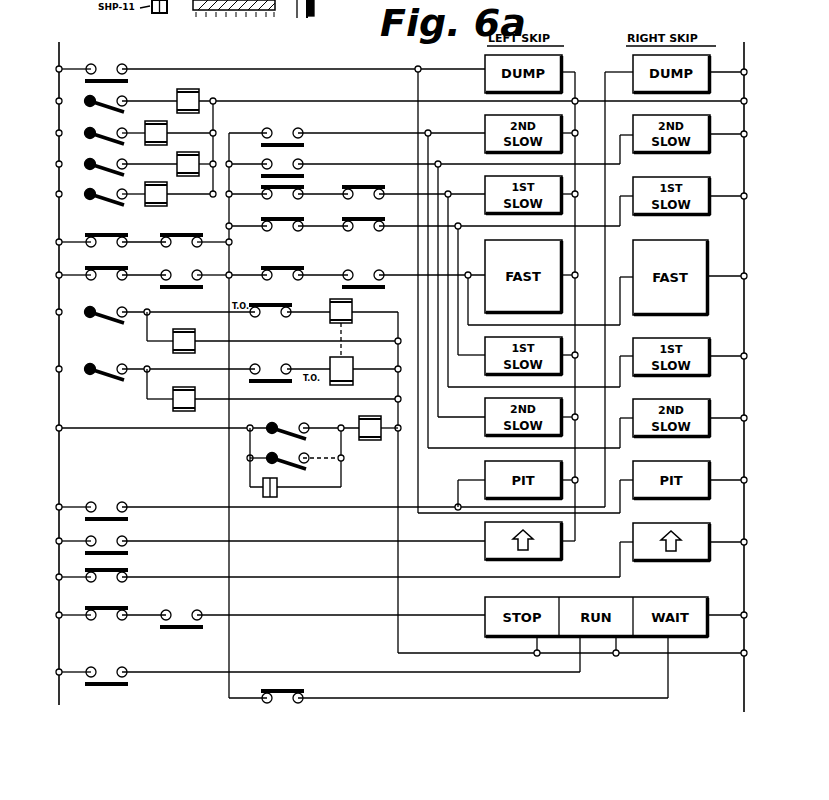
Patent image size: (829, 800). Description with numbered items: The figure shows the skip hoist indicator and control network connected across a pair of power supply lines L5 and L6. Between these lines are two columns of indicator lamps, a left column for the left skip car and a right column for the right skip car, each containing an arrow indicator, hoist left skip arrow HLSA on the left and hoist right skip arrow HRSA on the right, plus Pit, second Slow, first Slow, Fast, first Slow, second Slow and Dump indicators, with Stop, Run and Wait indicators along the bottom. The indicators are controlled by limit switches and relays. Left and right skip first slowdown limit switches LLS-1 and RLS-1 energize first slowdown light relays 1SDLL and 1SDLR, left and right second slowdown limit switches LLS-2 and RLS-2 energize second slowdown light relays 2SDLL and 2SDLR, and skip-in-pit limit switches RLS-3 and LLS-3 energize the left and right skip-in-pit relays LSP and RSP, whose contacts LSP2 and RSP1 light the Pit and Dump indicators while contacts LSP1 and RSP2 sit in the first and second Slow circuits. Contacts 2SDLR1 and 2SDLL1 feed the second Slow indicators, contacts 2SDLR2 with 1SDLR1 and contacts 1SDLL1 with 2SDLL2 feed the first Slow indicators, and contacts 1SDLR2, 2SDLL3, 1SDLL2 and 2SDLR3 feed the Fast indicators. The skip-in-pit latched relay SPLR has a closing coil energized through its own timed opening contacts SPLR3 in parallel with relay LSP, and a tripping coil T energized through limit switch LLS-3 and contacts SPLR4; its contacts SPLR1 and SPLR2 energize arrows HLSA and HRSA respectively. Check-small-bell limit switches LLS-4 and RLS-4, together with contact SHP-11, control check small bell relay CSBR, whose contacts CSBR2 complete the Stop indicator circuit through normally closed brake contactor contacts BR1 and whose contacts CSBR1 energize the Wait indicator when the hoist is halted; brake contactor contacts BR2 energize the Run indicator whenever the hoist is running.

The power supply line L5 is at (59, 48).
The power supply line L6 is at (744, 48).
The right skip-in-pit relay contacts RSP1 is at (108, 66).
The left skip first slowdown limit switch LLS-1 is at (123, 93).
The left skip first slowdown light relay 1SDLL is at (199, 92).
The right skip first slowdown limit switch RLS-1 is at (100, 132).
The right skip first slowdown light relay 1SDLR is at (167, 126).
The left skip second slowdown limit switch LLS-2 is at (100, 148).
The left skip second slowdown light relay 2SDLL is at (177, 157).
The right skip second slowdown limit switch RLS-2 is at (100, 178).
The right skip second slowdown light relay 2SDLR is at (167, 204).
The right skip-in-pit relay contacts RSP2 is at (103, 245).
The left skip-in-pit relay contacts LSP1 is at (166, 246).
The first slowdown left relay contacts 1SDLL2 is at (180, 258).
The second slowdown left relay contacts 2SDLL3 is at (113, 280).
The right skip-in-pit limit switch RLS-3 is at (109, 305).
The left skip-in-pit relay LSP is at (195, 338).
The left skip-in-pit limit switch LLS-3 is at (110, 353).
The right skip-in-pit relay RSP is at (195, 392).
The timed opening contacts SPLR3 is at (268, 315).
The skip-in-pit latched relay SPLR is at (346, 323).
The latched relay contacts SPLR4 is at (280, 372).
The tripping coil T is at (347, 370).
The left skip check-small-bell limit switch LLS-4 is at (293, 414).
The right skip check-small-bell limit switch RLS-4 is at (293, 444).
The check small bell relay CSBR is at (381, 440).
The SHP switch contact SHP-11 is at (278, 492).
The left skip-in-pit relay contacts LSP2 is at (108, 508).
The latched relay contacts SPLR1 is at (110, 541).
The latched relay contacts SPLR2 is at (116, 578).
The brake contactor contacts BR1 is at (105, 618).
The check small bell relay contacts CSBR2 is at (181, 616).
The brake contactor contacts BR2 is at (106, 670).
The check small bell relay contacts CSBR1 is at (284, 702).
The second slowdown left relay contacts 2SDLL1 is at (279, 130).
The second slowdown right relay contacts 2SDLR1 is at (289, 161).
The first slowdown left relay contacts 1SDLL1 is at (279, 198).
The second slowdown left relay contacts 2SDLL2 is at (360, 198).
The second slowdown right relay contacts 2SDLR2 is at (297, 224).
The first slowdown right relay contacts 1SDLR1 is at (366, 224).
The first slowdown right relay contacts 1SDLR2 is at (361, 272).
The second slowdown right relay contacts 2SDLR3 is at (279, 279).
The hoist left skip arrow indicator HLSA is at (485, 526).
The hoist right skip arrow indicator HRSA is at (633, 527).